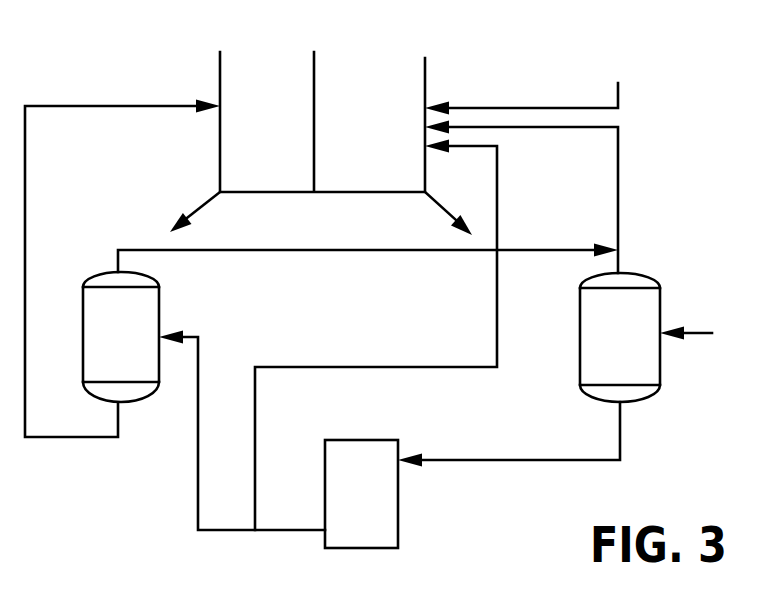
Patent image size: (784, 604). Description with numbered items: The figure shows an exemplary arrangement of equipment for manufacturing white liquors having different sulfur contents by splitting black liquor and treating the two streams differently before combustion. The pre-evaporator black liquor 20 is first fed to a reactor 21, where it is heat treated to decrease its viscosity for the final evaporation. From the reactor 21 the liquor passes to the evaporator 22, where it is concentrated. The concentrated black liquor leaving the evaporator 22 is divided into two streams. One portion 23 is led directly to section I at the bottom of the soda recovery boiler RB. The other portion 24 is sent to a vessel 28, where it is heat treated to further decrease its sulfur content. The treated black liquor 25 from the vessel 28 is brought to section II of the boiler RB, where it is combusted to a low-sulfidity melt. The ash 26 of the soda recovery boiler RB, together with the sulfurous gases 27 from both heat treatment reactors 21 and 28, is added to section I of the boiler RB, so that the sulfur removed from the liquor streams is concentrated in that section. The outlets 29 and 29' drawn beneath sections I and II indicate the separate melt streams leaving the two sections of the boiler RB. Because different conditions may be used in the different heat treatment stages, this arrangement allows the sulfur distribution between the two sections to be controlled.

The soda recovery boiler RB is at (202, 41).
The pre-evaporator black liquor 20 is at (706, 332).
The reactor 21 is at (662, 376).
The evaporator 22 is at (399, 516).
The first portion of concentrated black liquor 23 is at (255, 430).
The second portion of concentrated black liquor 24 is at (198, 478).
The treated black liquor 25 is at (146, 108).
The ash 26 is at (513, 107).
The sulfurous gases 27 is at (618, 193).
The vessel 28 is at (162, 318).
The low-sulfidity melt outlet from section I 29 is at (432, 215).
The melt outlet from section II 29' is at (212, 215).